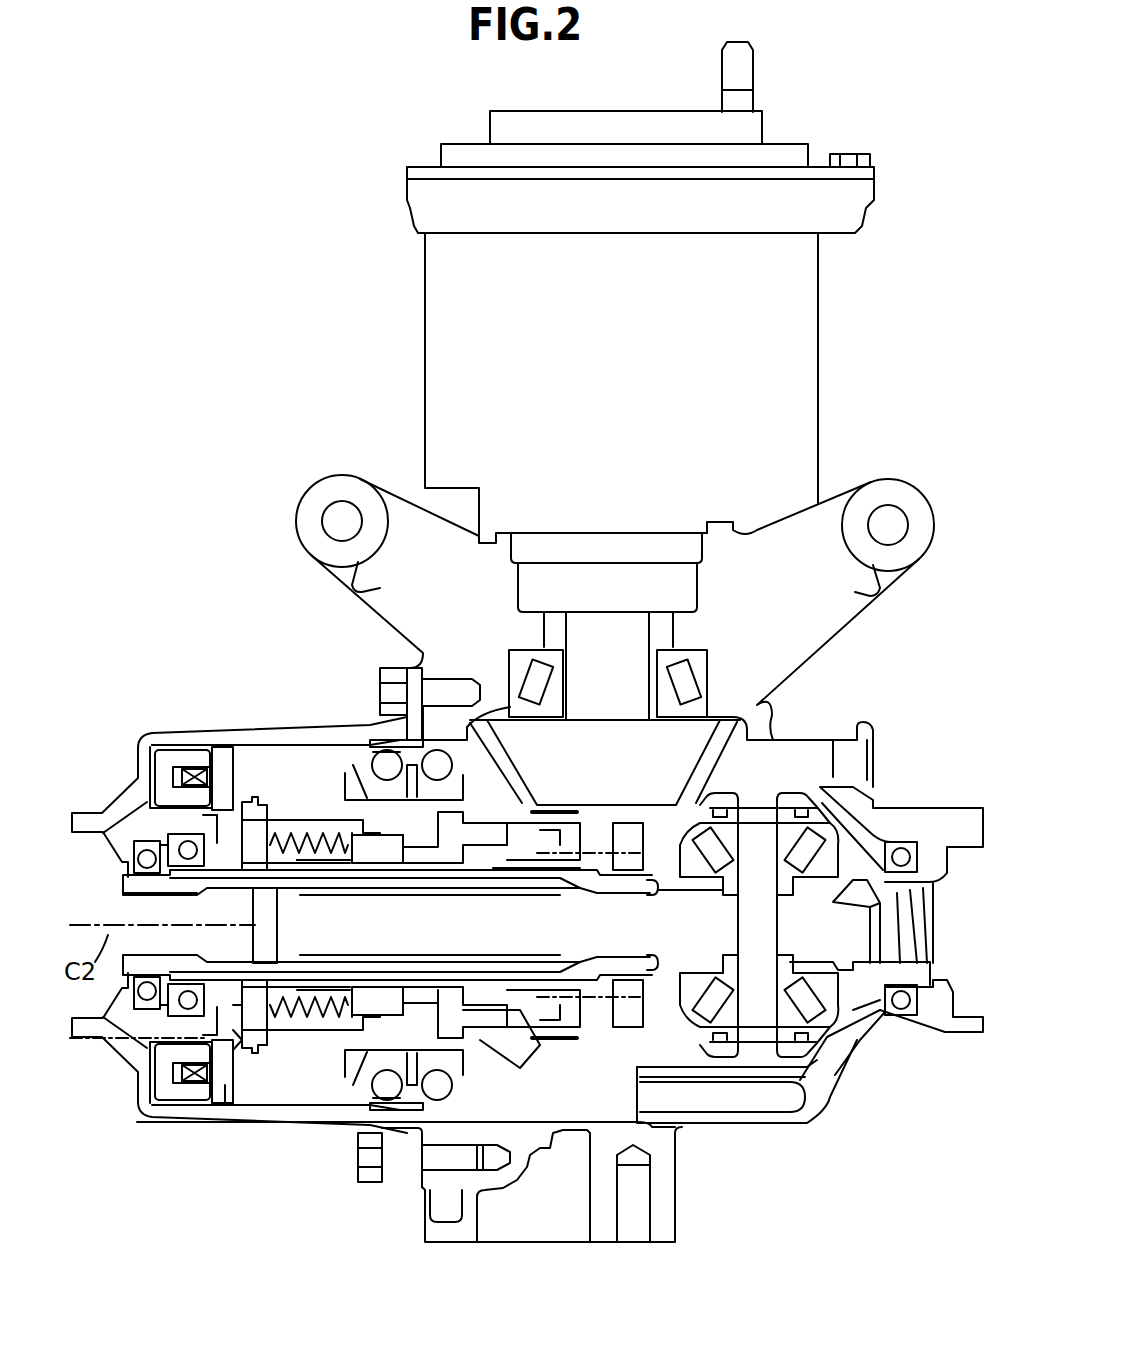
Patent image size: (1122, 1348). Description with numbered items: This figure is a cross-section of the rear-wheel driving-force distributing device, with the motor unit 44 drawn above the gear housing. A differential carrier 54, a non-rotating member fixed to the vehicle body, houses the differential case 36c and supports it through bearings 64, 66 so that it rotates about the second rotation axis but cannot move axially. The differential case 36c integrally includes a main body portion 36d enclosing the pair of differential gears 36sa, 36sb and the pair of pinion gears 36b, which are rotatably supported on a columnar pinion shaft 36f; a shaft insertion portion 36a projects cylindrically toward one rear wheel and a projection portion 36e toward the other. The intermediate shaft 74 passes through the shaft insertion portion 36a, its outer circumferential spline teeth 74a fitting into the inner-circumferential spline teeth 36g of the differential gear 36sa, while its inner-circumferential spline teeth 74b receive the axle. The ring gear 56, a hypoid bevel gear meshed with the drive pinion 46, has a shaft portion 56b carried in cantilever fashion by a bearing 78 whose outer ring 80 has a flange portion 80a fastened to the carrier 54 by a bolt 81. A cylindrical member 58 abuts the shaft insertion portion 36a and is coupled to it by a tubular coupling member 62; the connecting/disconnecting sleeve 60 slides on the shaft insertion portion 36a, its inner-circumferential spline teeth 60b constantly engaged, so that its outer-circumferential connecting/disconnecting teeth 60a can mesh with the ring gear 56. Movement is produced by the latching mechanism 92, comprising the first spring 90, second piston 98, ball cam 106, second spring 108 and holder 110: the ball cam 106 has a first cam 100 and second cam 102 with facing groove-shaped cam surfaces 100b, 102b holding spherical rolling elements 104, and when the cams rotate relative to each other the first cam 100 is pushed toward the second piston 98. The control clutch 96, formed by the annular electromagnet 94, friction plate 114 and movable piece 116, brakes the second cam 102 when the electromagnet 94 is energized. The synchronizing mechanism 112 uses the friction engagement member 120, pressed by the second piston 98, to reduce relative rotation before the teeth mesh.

The electric motor 44 is at (905, 322).
The differential carrier 54 is at (830, 605).
The drive pinion 46 is at (700, 735).
The electromagnet 94 is at (181, 760).
The latching mechanism 92 is at (297, 742).
The second cam 102 is at (250, 815).
The first cam 100 is at (262, 835).
The holder 110 is at (353, 867).
The friction engagement member 120 is at (445, 850).
The connecting/disconnecting sleeve 60 is at (545, 845).
The outer-circumferential connecting/disconnecting teeth 60a is at (510, 815).
The inner-circumferential spline teeth 60b is at (500, 880).
The second spring 108 is at (595, 853).
The bearing 78 is at (390, 760).
The outer ring 80 is at (440, 695).
The flange portion 80a is at (415, 675).
The bolt 81 is at (380, 692).
The bearing 64 is at (183, 852).
The intermediate shaft 74 is at (287, 922).
The inner-circumferential spline teeth 74b is at (213, 893).
The outer circumferential spline teeth 74a is at (680, 950).
The first spring 90 is at (285, 873).
The cylindrical member 58 is at (308, 985).
The second piston 98 is at (393, 997).
The tubular coupling member 62 is at (433, 987).
The spherical rolling element 104 is at (115, 1038).
The ball cam 106 is at (252, 1052).
The cam surface 100b is at (242, 1040).
The cam surface 102b is at (235, 997).
The control clutch 96 is at (158, 1132).
The friction plate 114 is at (217, 1110).
The movable piece 116 is at (227, 1095).
The synchronizing mechanism 112 is at (478, 1055).
The ring gear 56 is at (503, 1115).
The shaft portion 56b is at (428, 1052).
The pinion gear 36b is at (790, 845).
The inner-circumferential spline teeth 36g is at (760, 957).
The differential gear 36sa is at (682, 1025).
The differential gear 36sb is at (813, 985).
The shaft insertion portion 36a is at (620, 985).
The pinion shaft 36f is at (783, 1097).
The differential case 36c is at (808, 1060).
The main body portion 36d is at (855, 1005).
The projection portion 36e is at (927, 963).
The bearing 66 is at (895, 1012).